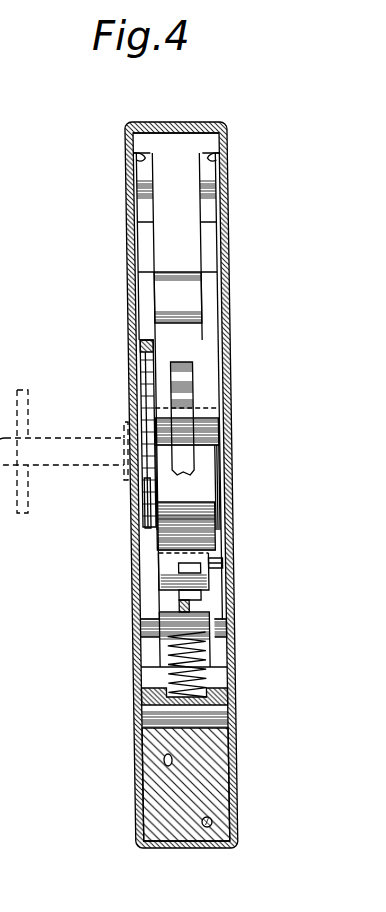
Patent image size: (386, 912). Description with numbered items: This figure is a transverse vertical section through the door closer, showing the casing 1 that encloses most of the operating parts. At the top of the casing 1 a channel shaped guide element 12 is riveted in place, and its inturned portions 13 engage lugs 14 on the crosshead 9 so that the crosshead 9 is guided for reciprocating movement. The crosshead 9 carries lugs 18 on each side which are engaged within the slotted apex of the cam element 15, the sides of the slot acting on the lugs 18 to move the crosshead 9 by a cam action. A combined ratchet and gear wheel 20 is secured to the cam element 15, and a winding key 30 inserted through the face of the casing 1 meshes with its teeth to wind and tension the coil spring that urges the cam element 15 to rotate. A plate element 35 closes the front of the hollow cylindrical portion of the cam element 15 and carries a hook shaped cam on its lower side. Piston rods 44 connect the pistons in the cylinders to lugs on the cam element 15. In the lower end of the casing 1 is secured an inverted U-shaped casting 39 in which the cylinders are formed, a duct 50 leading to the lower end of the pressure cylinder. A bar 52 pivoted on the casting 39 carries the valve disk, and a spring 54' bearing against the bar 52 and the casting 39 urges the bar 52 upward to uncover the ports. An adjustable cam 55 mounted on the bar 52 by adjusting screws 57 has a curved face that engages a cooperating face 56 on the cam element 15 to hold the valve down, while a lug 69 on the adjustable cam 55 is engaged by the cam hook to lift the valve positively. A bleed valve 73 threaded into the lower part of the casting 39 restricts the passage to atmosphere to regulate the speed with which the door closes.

The casing 1 is at (132, 122).
The channel shaped guide element 12 is at (180, 130).
The lugs on the crosshead 14 is at (145, 141).
The inturned portions 13 is at (130, 157).
The crosshead 9 is at (179, 386).
The lugs 18 is at (143, 222).
The cam element 15 is at (210, 287).
The combined ratchet and gear wheel 20 is at (142, 372).
The winding key 30 is at (68, 435).
The piston rods 44 is at (178, 447).
The plate element 35 is at (218, 493).
The cooperating cam face 56 is at (175, 533).
The adjustable cam 55 is at (163, 562).
The lug 69 is at (225, 563).
The adjusting screws 57 is at (177, 602).
The bar 52 is at (172, 620).
The spring 54' is at (159, 679).
The casting 39 is at (157, 793).
The duct 50 is at (165, 760).
The bleed valve 73 is at (207, 828).